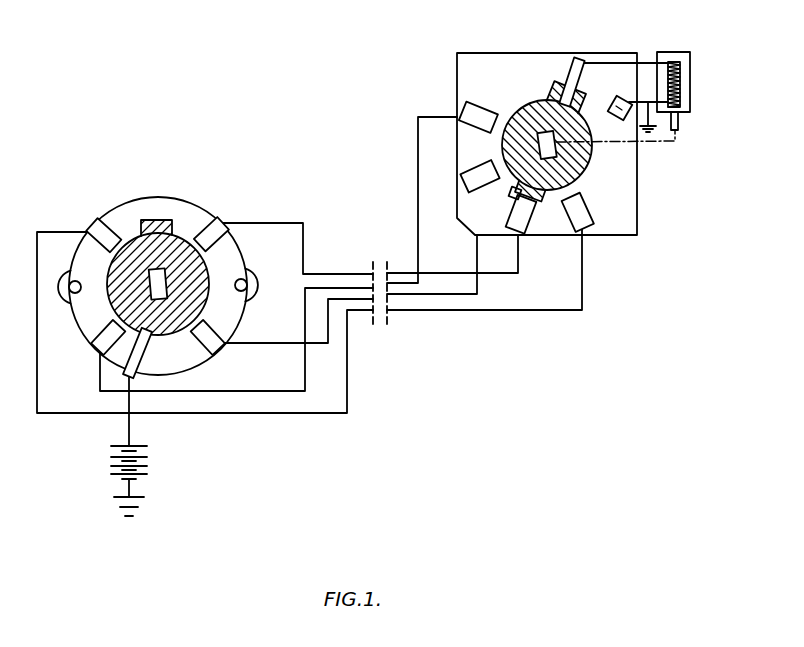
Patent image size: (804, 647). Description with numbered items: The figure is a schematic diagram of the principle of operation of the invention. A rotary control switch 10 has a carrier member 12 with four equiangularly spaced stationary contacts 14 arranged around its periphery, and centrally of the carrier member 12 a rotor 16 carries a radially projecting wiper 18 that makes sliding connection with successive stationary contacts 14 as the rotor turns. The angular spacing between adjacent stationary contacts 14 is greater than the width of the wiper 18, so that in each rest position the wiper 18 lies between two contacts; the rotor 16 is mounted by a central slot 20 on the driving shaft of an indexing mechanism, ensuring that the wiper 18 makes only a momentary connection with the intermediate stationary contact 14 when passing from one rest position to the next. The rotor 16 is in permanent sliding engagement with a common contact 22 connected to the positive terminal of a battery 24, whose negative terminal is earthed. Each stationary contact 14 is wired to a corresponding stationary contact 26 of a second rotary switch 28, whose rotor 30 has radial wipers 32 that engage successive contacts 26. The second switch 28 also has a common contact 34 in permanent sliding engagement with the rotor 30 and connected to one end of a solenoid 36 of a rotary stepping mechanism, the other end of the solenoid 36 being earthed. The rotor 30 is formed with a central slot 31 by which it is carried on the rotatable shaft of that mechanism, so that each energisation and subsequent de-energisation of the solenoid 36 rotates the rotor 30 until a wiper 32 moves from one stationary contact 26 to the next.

The rotary control switch 10 is at (66, 262).
The carrier member 12 is at (85, 307).
The stationary contacts 14 is at (94, 228).
The rotor 16 is at (203, 272).
The wiper 18 is at (157, 219).
The central slot 20 is at (167, 292).
The common contact 22 is at (137, 373).
The battery 24 is at (108, 456).
The stationary contacts of second rotary switch 26 is at (478, 173).
The second rotary switch 28 is at (452, 67).
The rotor of second rotary switch 30 is at (538, 106).
The central slot 31 is at (556, 150).
The radial wipers 32 is at (556, 80).
The common contact 34 is at (579, 57).
The solenoid 36 is at (682, 80).